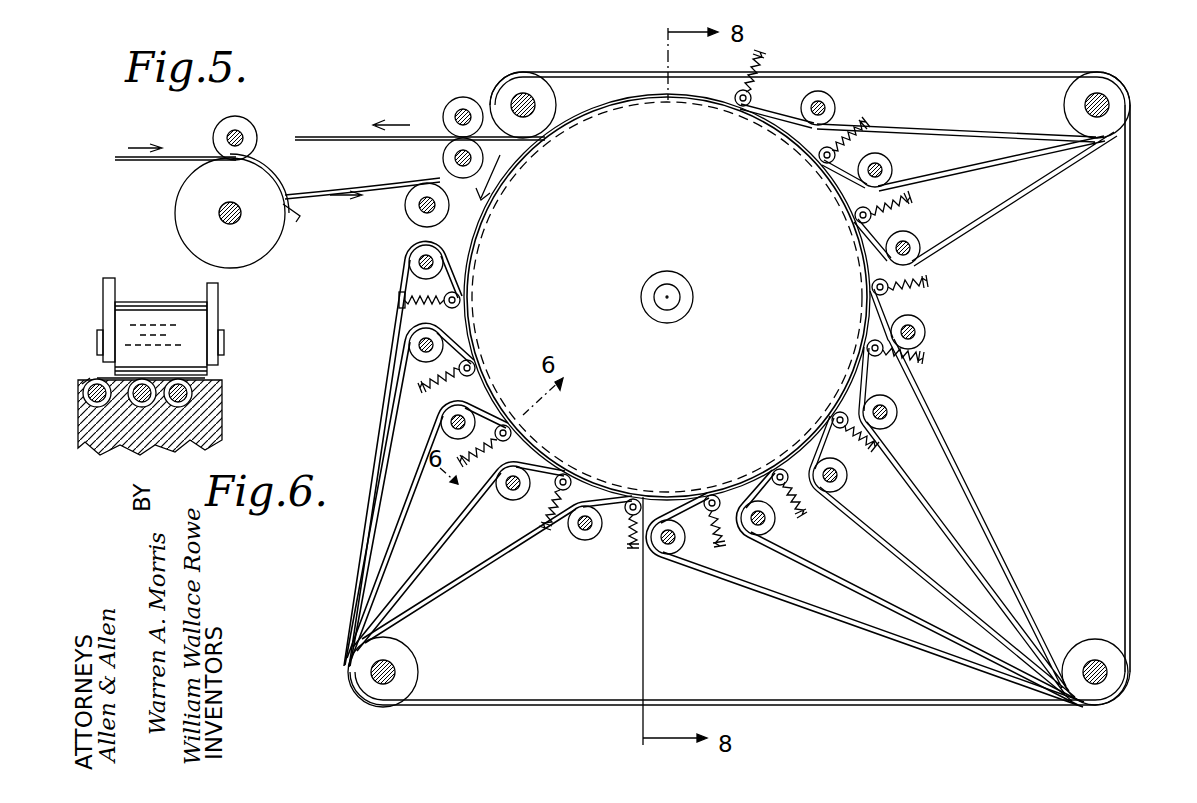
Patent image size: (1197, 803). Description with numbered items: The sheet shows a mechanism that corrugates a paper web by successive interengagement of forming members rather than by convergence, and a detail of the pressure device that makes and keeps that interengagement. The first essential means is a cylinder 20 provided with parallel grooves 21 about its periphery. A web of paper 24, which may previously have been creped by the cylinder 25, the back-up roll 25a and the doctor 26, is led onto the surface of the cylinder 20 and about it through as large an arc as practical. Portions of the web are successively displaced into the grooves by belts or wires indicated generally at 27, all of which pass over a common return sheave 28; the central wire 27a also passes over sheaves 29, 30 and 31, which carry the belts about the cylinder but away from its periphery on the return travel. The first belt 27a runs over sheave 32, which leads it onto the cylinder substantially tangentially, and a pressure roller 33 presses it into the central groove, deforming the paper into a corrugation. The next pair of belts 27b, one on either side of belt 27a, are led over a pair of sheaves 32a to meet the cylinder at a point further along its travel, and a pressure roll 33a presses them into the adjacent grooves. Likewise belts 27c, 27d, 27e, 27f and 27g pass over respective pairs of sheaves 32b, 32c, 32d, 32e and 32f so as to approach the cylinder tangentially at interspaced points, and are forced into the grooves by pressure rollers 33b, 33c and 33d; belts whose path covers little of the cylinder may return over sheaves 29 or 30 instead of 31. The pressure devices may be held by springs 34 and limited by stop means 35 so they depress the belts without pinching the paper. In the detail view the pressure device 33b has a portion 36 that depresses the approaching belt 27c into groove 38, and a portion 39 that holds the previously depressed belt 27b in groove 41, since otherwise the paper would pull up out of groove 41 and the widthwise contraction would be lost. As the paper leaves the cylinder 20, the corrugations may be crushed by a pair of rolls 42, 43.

In FIG. 5, the cylinder 20 is at (667, 297).
In FIG. 6, the cylinder 20 is at (134, 452).
In FIG. 5, the parallel grooves 21 is at (600, 112).
In FIG. 5, the web of paper 24 is at (190, 157).
In FIG. 5, the cylinder 25 is at (232, 211).
In FIG. 5, the back-up roll 25a is at (240, 132).
In FIG. 5, the doctor 26 is at (290, 224).
In FIG. 5, the wires 27 is at (926, 75).
In FIG. 5, the first belt 27a is at (388, 425).
In FIG. 5, the pair of belts 27b is at (388, 465).
In FIG. 6, the pair of belts 27b is at (98, 372).
In FIG. 5, the belts 27c is at (430, 480).
In FIG. 6, the belts 27c is at (205, 375).
In FIG. 5, the belts 27d is at (462, 530).
In FIG. 5, the belts 27e is at (520, 565).
In FIG. 5, the belts 27f is at (758, 608).
In FIG. 5, the belts 27g is at (800, 578).
In FIG. 5, the common return sheave 28 is at (532, 88).
In FIG. 5, the sheave 29 is at (1110, 95).
In FIG. 5, the sheave 30 is at (1122, 680).
In FIG. 5, the sheave 31 is at (378, 700).
In FIG. 5, the sheave 32 is at (420, 263).
In FIG. 5, the pair of sheaves 32a is at (420, 346).
In FIG. 5, the pair of sheaves 32b is at (441, 424).
In FIG. 5, the pair of sheaves 32c is at (524, 476).
In FIG. 5, the pair of sheaves 32d is at (597, 508).
In FIG. 5, the pair of sheaves 32e is at (676, 555).
In FIG. 5, the pair of sheaves 32f is at (776, 528).
In FIG. 5, the pressure roller 33 is at (462, 299).
In FIG. 5, the pressure roll 33a is at (475, 364).
In FIG. 5, the pressure device 33b is at (504, 425).
In FIG. 6, the pressure device 33b is at (138, 320).
In FIG. 5, the pressure roller 33c is at (571, 476).
In FIG. 5, the pressure roller 33d is at (642, 500).
In FIG. 5, the springs 34 is at (404, 298).
In FIG. 5, the stop means 35 is at (399, 304).
In FIG. 6, the portion 36 is at (200, 292).
In FIG. 6, the groove 38 is at (200, 422).
In FIG. 6, the portion 39 is at (148, 292).
In FIG. 6, the groove 41 is at (104, 442).
In FIG. 5, the roll 42 is at (446, 158).
In FIG. 5, the roll 43 is at (462, 112).